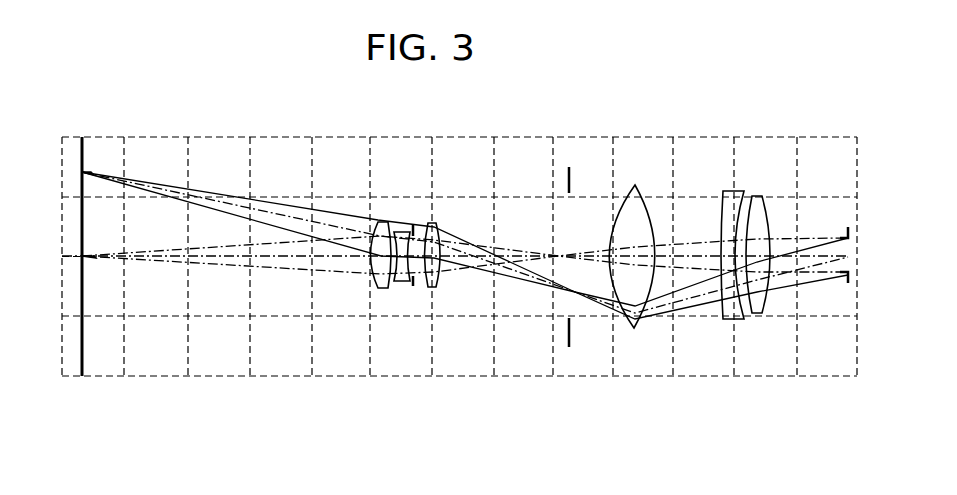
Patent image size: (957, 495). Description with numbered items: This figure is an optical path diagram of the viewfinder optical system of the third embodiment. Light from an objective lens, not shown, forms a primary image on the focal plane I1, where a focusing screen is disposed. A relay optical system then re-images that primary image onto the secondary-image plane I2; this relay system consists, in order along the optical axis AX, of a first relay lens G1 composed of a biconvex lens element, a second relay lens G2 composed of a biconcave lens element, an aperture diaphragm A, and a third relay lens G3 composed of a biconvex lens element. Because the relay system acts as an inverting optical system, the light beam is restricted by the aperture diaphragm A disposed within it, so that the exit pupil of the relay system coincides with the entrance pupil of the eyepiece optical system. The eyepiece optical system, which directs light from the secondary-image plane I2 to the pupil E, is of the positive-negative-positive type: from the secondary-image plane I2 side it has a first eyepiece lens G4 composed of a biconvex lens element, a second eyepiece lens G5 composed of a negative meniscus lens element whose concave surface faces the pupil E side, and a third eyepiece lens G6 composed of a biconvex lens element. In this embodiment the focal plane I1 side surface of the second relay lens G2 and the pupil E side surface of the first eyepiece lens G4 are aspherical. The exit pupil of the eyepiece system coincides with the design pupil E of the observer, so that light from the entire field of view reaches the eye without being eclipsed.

The focal plane I1 is at (83, 352).
The first relay lens G1 is at (383, 288).
The second relay lens G2 is at (400, 282).
The aperture diaphragm A is at (414, 284).
The third relay lens G3 is at (433, 289).
The secondary-image plane I2 is at (569, 347).
The first eyepiece lens G4 is at (634, 328).
The second eyepiece lens G5 is at (725, 319).
The third eyepiece lens G6 is at (759, 313).
The optical axis AX is at (832, 257).
The pupil E is at (849, 283).